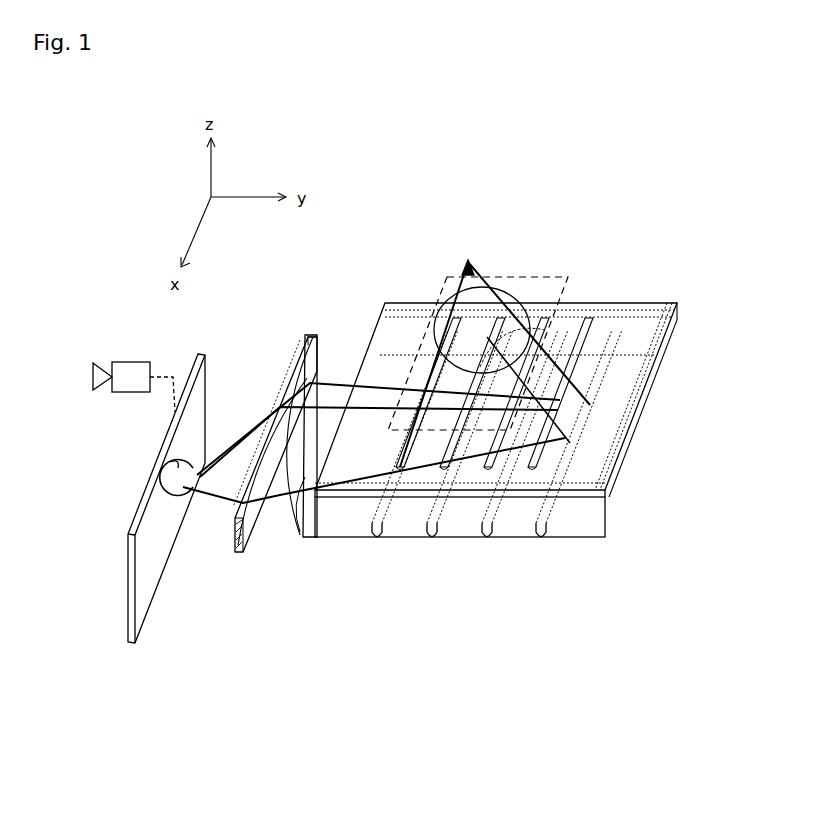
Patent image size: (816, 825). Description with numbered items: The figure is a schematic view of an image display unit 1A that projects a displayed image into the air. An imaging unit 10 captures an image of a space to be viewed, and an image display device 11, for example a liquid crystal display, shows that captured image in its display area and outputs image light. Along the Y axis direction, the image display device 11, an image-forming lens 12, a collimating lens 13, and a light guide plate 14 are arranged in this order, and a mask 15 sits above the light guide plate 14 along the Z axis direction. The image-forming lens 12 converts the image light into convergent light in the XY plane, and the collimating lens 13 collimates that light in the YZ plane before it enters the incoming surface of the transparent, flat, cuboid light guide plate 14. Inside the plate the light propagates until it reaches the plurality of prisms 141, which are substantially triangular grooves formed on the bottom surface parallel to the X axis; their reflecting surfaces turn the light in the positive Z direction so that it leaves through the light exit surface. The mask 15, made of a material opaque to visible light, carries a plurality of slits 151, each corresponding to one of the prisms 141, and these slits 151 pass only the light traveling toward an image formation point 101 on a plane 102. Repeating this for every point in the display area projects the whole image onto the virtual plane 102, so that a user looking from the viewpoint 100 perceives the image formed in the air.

The imaging unit 10 is at (130, 362).
The image display device 11 is at (127, 648).
The image-forming lens 12 is at (238, 556).
The collimating lens 13 is at (302, 542).
The light guide plate 14 is at (617, 512).
The prisms 141 is at (553, 543).
The mask 15 is at (653, 305).
The slits 151 is at (592, 433).
The viewpoint 100 is at (458, 280).
The image formation point 101 is at (432, 325).
The plane 102 is at (523, 278).
The image display unit 1A is at (580, 688).